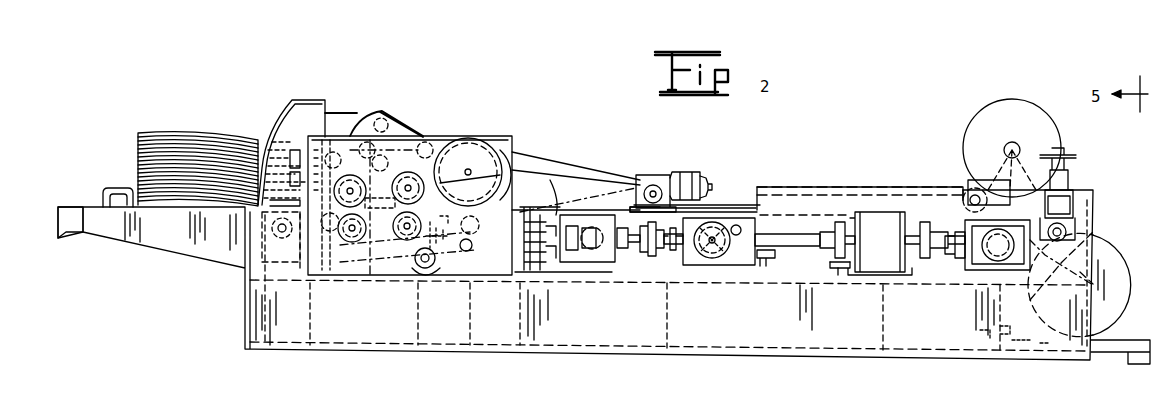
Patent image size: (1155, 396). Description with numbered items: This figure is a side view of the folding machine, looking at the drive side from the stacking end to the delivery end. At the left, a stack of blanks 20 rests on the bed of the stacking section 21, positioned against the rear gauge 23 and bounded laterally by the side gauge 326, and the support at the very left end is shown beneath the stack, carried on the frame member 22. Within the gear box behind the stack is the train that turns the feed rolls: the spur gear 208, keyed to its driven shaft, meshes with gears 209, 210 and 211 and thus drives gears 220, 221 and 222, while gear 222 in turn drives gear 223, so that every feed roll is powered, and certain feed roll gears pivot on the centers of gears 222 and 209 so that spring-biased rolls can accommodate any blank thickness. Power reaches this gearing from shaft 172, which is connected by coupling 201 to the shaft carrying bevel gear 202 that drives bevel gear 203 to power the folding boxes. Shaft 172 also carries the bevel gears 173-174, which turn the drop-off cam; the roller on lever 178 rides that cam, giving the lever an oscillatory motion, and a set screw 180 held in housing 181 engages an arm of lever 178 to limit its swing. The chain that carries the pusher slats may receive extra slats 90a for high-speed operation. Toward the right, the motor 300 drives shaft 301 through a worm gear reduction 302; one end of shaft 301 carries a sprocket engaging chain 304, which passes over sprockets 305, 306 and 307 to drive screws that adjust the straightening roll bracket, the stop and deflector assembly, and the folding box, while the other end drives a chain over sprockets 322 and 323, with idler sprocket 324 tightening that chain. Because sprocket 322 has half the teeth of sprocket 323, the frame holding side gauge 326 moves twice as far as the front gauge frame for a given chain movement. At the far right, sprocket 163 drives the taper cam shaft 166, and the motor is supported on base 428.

The stack of blanks 20 is at (187, 133).
The stacking section 21 is at (215, 85).
The platform 22 is at (228, 212).
The rear gauge 23 is at (112, 188).
The side gauge 326 is at (276, 120).
The idler sprocket 324 is at (352, 134).
The gear 223 is at (333, 140).
The gear 210 is at (470, 160).
The gear 211 is at (480, 195).
The sprocket 322 is at (380, 172).
The sprocket 323 is at (400, 200).
The gear 222 is at (381, 204).
The gear 220 is at (345, 238).
The gear 209 is at (372, 255).
The spur gear 208 is at (393, 262).
The sprocket 306 is at (430, 270).
The gear 221 is at (368, 280).
The bevel gear 202 is at (575, 283).
The extra slats 90a is at (579, 215).
The bevel gear 203 is at (630, 252).
The sprocket 307 is at (644, 258).
The coupling 201 is at (648, 258).
The shaft 172 is at (666, 250).
The housing 181 is at (688, 266).
The lever 178 is at (726, 280).
The set screw 180 is at (764, 258).
The bevel gears 173-174 is at (700, 216).
The shaft 301 is at (653, 190).
The worm gear reduction 302 is at (670, 176).
The motor 300 is at (695, 172).
The sprocket 305 is at (882, 190).
The chain 304 is at (810, 215).
The motor base 428 is at (838, 270).
The sprocket 163 is at (1003, 108).
The taper cam shaft 166 is at (1005, 146).